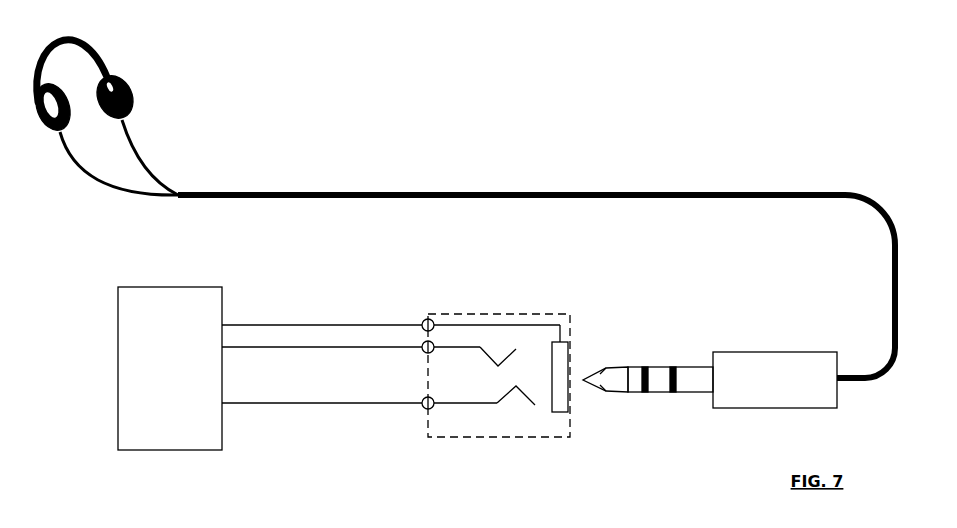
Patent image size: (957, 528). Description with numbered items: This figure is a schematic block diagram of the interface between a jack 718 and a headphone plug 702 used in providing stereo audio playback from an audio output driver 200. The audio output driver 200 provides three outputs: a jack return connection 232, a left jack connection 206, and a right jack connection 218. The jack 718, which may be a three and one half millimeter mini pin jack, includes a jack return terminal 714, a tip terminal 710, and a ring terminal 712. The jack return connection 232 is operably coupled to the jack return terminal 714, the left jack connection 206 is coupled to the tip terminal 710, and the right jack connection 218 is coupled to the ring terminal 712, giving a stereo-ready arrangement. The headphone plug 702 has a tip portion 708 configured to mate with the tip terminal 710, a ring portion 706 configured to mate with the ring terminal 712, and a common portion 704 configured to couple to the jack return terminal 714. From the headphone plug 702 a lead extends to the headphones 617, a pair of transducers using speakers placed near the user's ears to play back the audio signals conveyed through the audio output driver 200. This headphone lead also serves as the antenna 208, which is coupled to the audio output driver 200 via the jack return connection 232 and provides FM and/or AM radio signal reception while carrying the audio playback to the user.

The headphones 617 is at (144, 117).
The antenna 208 is at (455, 191).
The audio output driver 200 is at (170, 368).
The jack return connection 232 is at (391, 304).
The left jack connection 206 is at (351, 364).
The right jack connection 218 is at (359, 423).
The jack 718 is at (428, 428).
The tip terminal 710 is at (463, 348).
The jack return terminal 714 is at (543, 325).
The ring terminal 712 is at (473, 404).
The headphone plug 702 is at (775, 380).
The ring portion 706 is at (658, 367).
The tip portion 708 is at (630, 393).
The common portion 704 is at (703, 393).